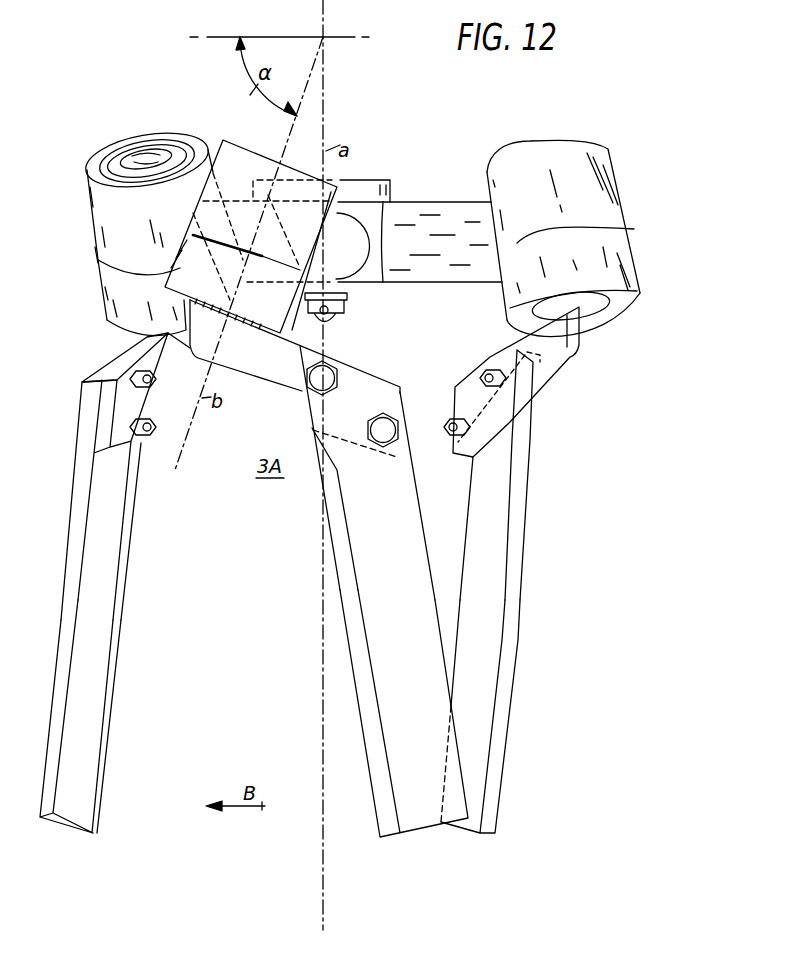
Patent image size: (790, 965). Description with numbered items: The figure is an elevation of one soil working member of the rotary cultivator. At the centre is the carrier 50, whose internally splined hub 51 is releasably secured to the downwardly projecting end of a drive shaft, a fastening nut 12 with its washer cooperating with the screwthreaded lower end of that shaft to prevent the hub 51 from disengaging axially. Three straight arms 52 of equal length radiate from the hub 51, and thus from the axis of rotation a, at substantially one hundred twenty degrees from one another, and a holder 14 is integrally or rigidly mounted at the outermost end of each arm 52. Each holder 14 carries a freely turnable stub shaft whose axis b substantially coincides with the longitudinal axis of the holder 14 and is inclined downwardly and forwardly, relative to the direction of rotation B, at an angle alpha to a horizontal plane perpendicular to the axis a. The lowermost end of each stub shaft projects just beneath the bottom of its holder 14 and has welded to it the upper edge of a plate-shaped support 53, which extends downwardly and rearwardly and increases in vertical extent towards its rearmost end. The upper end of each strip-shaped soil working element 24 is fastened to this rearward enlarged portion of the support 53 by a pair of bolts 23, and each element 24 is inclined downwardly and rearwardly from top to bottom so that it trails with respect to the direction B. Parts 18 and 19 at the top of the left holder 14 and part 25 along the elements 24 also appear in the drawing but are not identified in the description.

The fastening nut 12 is at (343, 313).
The holder 14 is at (280, 163).
The hub boss 18 is at (142, 156).
The ring 19 is at (182, 152).
The fastening bolt 23 is at (151, 424).
The soil working element 24 is at (74, 508).
The leg bar 25 is at (117, 596).
The support or carrier 50 is at (392, 167).
The hub 51 is at (395, 188).
The arm 52 is at (358, 275).
The support 53 is at (138, 341).